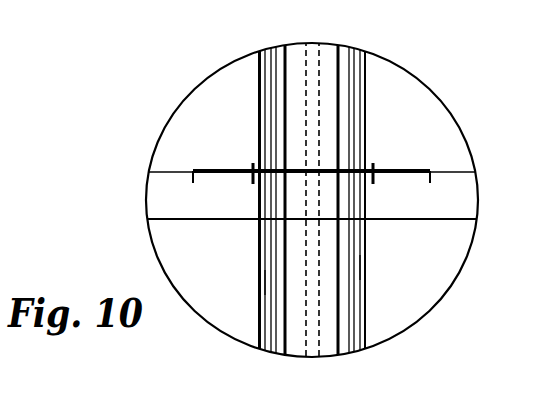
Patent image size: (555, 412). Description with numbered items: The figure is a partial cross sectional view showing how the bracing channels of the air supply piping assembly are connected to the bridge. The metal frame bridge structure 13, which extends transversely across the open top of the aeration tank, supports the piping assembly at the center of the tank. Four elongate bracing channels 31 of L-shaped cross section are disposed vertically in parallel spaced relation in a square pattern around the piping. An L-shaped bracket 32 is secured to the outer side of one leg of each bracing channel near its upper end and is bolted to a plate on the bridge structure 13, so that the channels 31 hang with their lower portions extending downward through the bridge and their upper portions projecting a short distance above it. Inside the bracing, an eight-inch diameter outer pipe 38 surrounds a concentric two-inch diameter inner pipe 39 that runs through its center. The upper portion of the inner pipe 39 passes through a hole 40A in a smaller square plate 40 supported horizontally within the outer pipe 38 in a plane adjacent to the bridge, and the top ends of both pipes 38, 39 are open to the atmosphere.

The metal frame bridge structure 13 is at (163, 200).
The bracing channel 31 is at (262, 282).
The L-shaped bracket 32 is at (368, 160).
The outer pipe 38 is at (287, 87).
The inner pipe 39 is at (322, 75).
The square plate 40 is at (306, 190).
The hole 40A is at (293, 177).